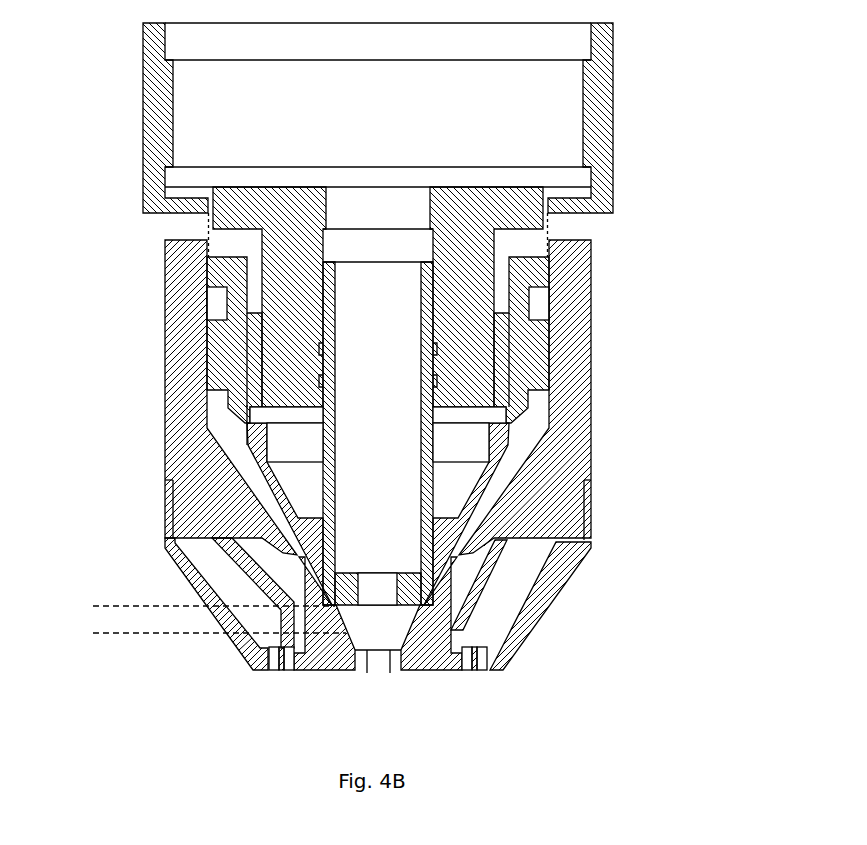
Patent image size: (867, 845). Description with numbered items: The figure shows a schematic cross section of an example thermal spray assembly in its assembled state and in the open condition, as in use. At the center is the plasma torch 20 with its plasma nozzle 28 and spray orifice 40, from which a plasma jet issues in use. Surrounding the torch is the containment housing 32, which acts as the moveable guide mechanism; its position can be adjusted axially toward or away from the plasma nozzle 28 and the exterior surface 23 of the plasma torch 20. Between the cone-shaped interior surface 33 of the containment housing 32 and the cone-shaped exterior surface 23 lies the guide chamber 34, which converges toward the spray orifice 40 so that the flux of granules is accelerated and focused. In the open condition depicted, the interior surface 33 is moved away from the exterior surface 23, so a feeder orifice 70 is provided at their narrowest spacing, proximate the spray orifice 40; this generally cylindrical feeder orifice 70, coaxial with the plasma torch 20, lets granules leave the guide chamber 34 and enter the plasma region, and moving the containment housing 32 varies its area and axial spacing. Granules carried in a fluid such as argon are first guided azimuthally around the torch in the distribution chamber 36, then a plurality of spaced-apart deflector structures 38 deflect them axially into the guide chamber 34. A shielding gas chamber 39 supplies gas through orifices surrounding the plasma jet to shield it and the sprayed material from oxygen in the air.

The plasma torch 20 is at (490, 436).
The exterior surface 23 is at (483, 492).
The plasma nozzle 28 is at (390, 673).
The containment housing 32 is at (568, 250).
The interior surface 33 is at (250, 495).
The guide chamber 34 is at (238, 453).
The distribution chamber 36 is at (542, 299).
The deflector structures 38 is at (540, 351).
The shielding gas chamber 39 is at (512, 613).
The spray orifice 40 is at (367, 673).
The feeder orifice 70 is at (93, 577).